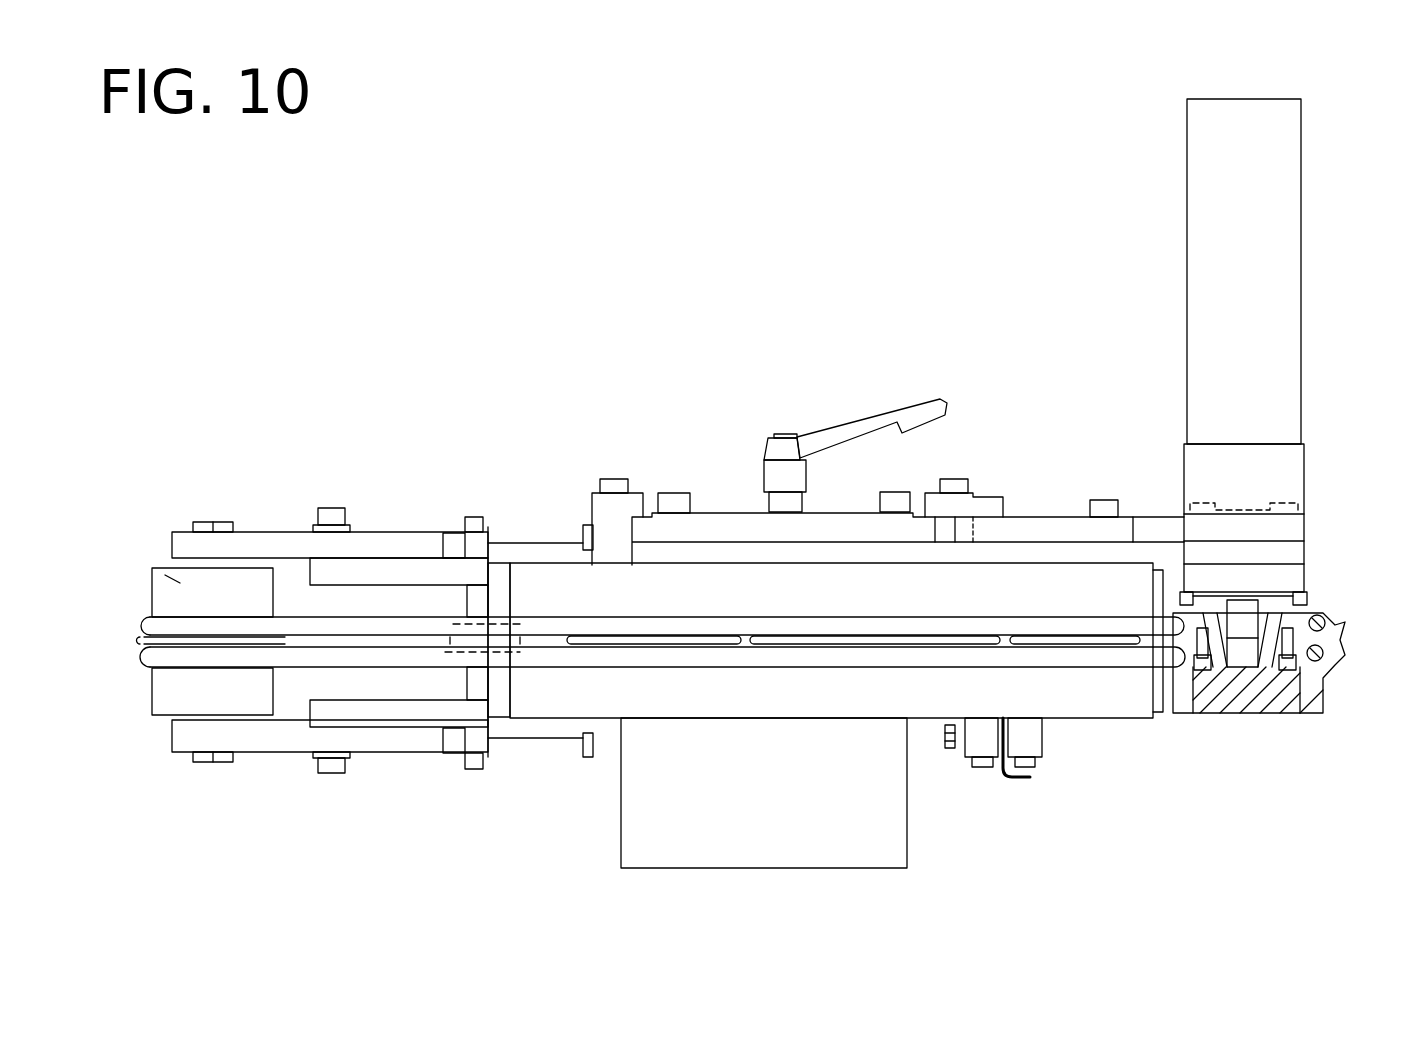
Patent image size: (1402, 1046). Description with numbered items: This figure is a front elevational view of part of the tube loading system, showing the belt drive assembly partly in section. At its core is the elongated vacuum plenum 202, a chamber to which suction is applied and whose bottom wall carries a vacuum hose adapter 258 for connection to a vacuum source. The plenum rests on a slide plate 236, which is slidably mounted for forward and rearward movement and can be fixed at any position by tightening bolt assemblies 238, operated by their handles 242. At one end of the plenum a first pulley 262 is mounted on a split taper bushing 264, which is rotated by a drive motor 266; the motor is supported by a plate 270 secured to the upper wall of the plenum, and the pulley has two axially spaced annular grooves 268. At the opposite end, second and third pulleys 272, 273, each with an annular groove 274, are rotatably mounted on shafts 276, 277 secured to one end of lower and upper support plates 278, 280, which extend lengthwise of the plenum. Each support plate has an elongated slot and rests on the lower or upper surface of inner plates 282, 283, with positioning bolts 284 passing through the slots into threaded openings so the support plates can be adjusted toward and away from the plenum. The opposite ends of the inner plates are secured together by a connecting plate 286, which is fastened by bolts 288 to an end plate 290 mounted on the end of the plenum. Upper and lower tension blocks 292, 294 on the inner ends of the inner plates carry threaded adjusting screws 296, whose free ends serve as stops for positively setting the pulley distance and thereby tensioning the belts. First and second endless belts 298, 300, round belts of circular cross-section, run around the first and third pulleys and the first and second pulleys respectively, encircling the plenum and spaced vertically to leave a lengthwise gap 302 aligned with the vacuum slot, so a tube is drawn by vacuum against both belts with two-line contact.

The vacuum plenum 202 is at (1105, 700).
The slide plate 236 is at (713, 520).
The tightening bolt assemblies 238 is at (780, 422).
The handles 242 is at (850, 420).
The vacuum hose adapter 258 is at (820, 855).
The first pulley 262 is at (1318, 678).
The split taper bushing 264 is at (1253, 697).
The drive motor 266 is at (1293, 262).
The annular grooves 268 is at (1328, 622).
The plate 270 is at (1160, 527).
The second pulley 272 is at (160, 692).
The third pulley 273 is at (178, 582).
The annular groove 274 is at (145, 617).
The shaft 276 is at (217, 762).
The shaft 277 is at (200, 522).
The lower support plate 278 is at (185, 737).
The upper support plate 280 is at (255, 532).
The inner plate 282 is at (420, 713).
The inner plate 283 is at (425, 570).
The positioning bolts 284 is at (320, 505).
The connecting plate 286 is at (493, 590).
The bolts 288 is at (447, 630).
The end plate 290 is at (497, 707).
The upper tension block 292 is at (468, 517).
The lower tension block 294 is at (487, 755).
The adjusting screws 296 is at (557, 530).
The first endless belt 298 is at (855, 622).
The second endless belt 300 is at (897, 657).
The gap 302 is at (778, 640).